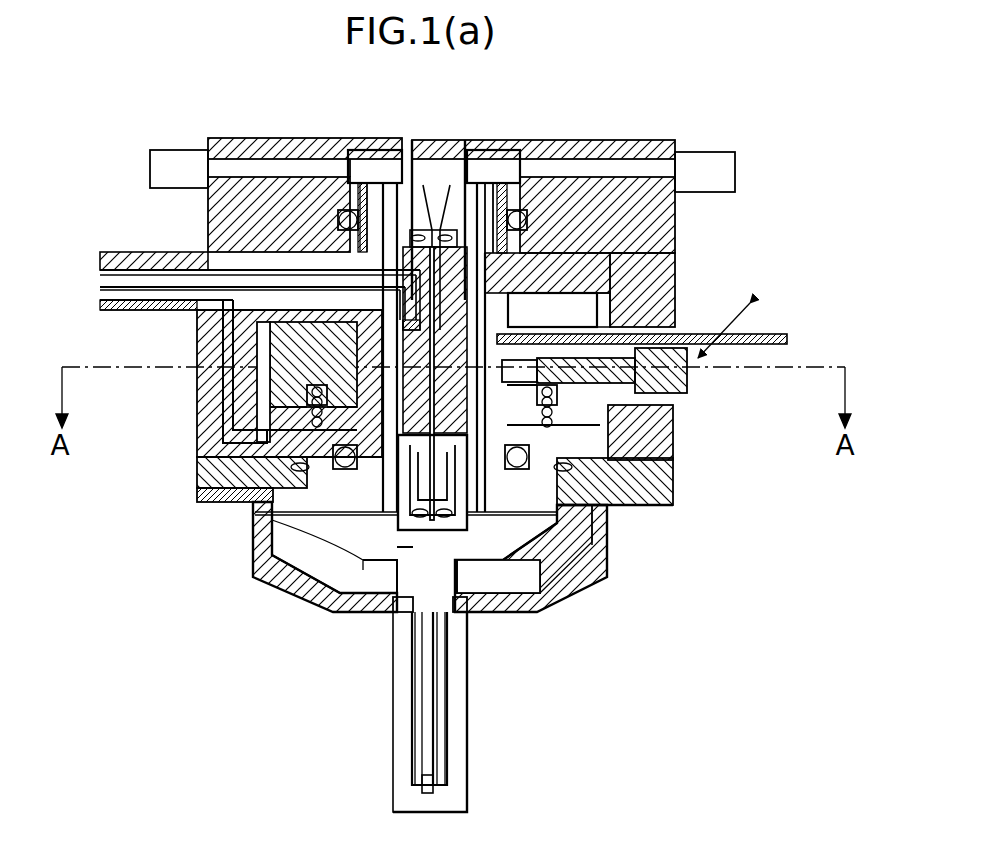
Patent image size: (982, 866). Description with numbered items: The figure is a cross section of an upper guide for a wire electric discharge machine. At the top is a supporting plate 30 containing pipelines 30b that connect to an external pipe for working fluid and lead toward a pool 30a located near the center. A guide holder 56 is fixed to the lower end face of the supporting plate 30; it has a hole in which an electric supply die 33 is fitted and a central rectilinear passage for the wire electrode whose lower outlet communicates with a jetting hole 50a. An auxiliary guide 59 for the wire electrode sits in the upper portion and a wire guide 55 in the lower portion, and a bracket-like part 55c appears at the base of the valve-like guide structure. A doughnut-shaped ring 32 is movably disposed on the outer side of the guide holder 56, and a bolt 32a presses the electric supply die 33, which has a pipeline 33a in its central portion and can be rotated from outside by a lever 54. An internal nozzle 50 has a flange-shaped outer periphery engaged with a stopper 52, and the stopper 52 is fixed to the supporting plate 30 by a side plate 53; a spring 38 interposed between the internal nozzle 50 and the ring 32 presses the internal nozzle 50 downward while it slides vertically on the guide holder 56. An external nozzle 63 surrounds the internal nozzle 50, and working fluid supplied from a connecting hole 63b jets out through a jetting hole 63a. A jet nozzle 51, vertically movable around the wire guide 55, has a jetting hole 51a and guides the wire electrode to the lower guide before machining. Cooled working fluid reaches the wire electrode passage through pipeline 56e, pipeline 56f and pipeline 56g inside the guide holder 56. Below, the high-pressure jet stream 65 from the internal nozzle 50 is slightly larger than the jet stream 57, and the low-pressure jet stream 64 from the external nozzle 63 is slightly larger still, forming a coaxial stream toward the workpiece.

The supporting plate 30 is at (284, 148).
The pool 30a is at (493, 162).
The pipelines 30b is at (590, 172).
The pipeline 56f is at (405, 330).
The auxiliary guide 59 is at (437, 240).
The pipeline 56e is at (112, 258).
The pipeline 33a is at (478, 199).
The electric supply die 33 is at (482, 287).
The side plate 53 is at (662, 272).
The lever 54 is at (768, 332).
The pipeline 56g is at (260, 335).
The ring 32 is at (283, 392).
The guide holder 56 is at (232, 497).
The bracket 55c is at (320, 518).
The bolt 32a is at (684, 388).
The spring 38 is at (550, 414).
The stopper 52 is at (675, 470).
The wire guide 55 is at (453, 503).
The connecting hole 63b is at (600, 535).
The jet nozzle 51 is at (373, 495).
The jetting hole 51a is at (459, 562).
The internal nozzle 50 is at (288, 573).
The jetting hole 50a is at (366, 600).
The jetting hole 63a is at (468, 610).
The external nozzle 63 is at (584, 580).
The high-pressure jet stream 65 is at (415, 714).
The low-pressure jet stream 64 is at (400, 768).
The jet stream 57 is at (433, 793).